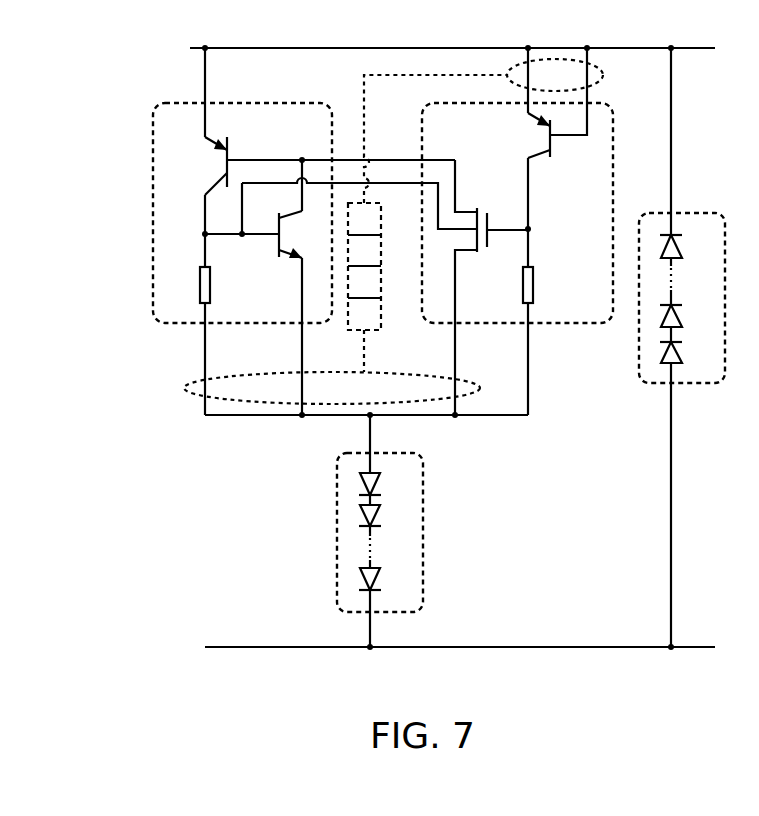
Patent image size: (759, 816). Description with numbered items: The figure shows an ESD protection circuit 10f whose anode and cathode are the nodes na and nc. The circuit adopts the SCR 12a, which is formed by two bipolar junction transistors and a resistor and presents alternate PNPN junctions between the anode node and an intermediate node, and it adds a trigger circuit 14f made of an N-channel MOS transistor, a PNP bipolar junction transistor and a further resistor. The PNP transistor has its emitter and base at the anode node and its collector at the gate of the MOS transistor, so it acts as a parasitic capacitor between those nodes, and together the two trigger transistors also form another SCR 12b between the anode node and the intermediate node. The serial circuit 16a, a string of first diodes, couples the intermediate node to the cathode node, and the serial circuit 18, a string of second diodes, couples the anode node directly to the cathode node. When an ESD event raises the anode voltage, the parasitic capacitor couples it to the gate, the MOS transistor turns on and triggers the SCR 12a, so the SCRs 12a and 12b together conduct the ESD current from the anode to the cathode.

The ESD protection circuit 10f is at (118, 100).
The SCR 12a is at (150, 165).
The SCR 12b is at (378, 330).
The trigger circuit 14f is at (553, 324).
The serial circuit 16a is at (337, 526).
The serial circuit 18 is at (690, 385).